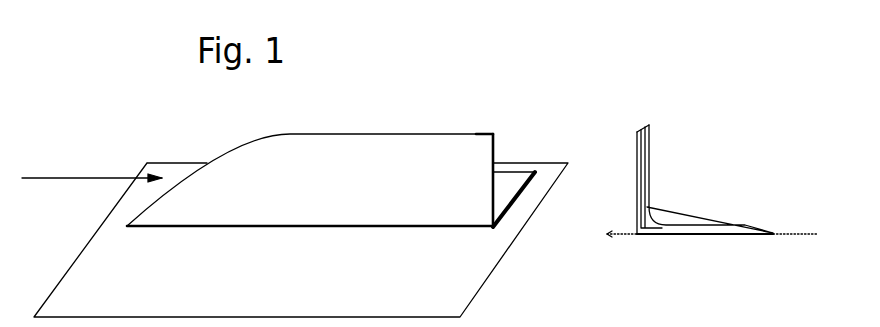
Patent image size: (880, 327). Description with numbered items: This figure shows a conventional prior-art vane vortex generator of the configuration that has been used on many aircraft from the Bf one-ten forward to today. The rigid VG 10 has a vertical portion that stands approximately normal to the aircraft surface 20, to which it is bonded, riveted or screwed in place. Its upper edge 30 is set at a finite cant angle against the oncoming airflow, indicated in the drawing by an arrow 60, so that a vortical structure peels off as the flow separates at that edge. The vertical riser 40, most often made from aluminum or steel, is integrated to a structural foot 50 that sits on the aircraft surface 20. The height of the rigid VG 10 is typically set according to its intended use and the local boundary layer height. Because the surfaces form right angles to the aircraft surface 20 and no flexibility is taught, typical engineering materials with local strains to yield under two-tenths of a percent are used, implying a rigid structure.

The rigid VG 10 is at (218, 153).
The aircraft surface 20 is at (627, 237).
The upper edge 30 is at (476, 133).
The vertical riser 40 is at (493, 146).
The structural foot 50 is at (648, 208).
The flow direction arrow 60 is at (92, 158).